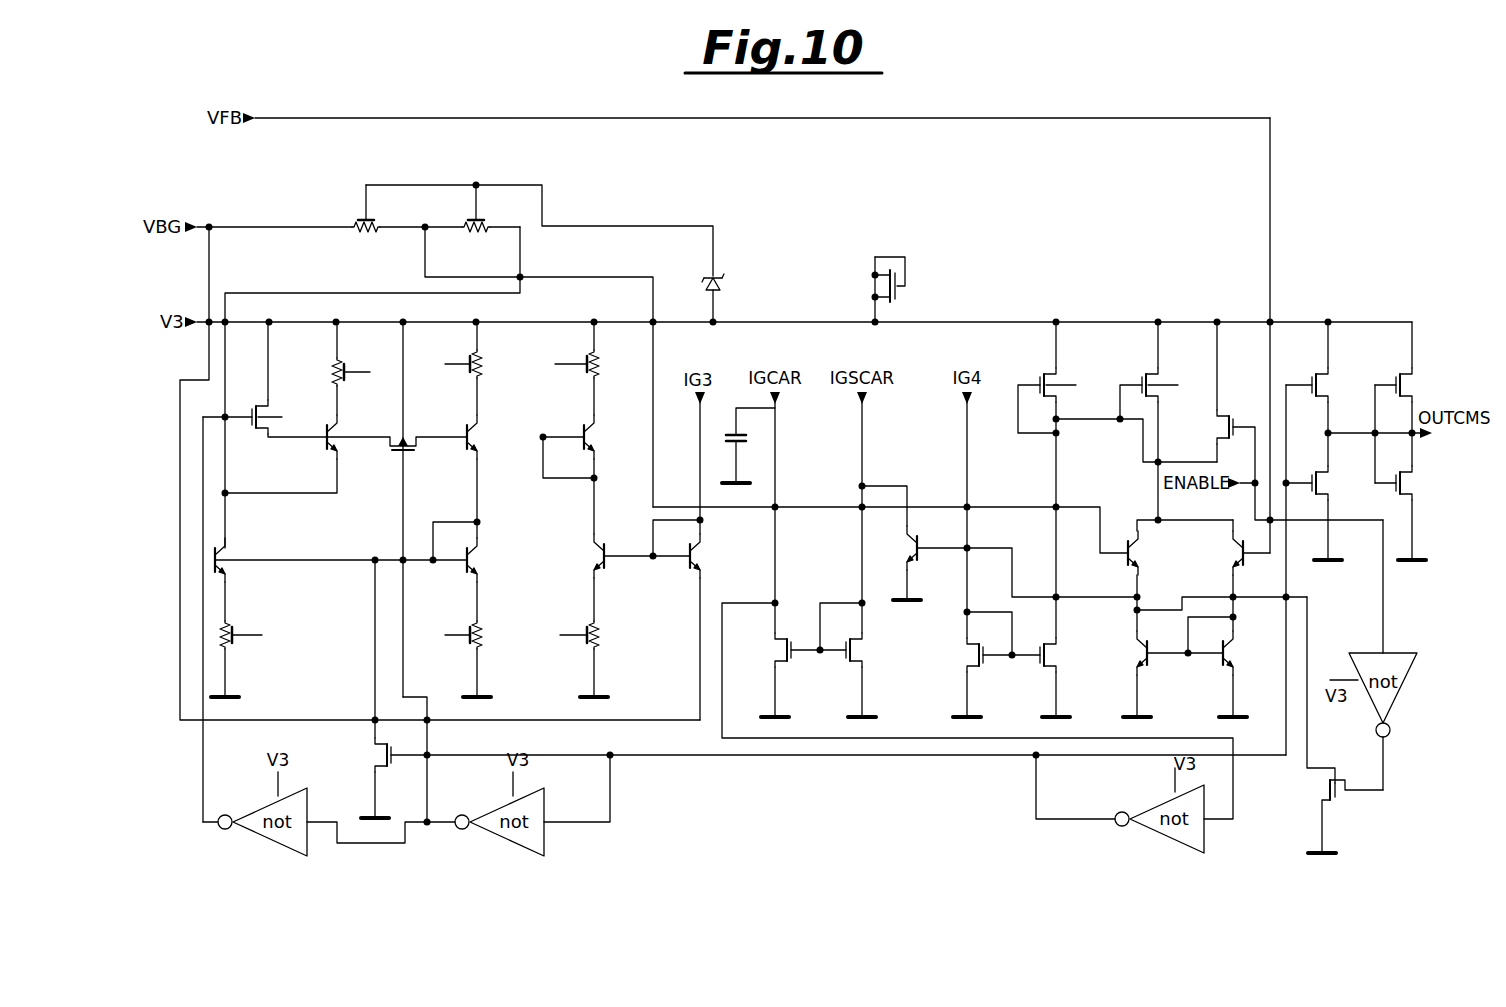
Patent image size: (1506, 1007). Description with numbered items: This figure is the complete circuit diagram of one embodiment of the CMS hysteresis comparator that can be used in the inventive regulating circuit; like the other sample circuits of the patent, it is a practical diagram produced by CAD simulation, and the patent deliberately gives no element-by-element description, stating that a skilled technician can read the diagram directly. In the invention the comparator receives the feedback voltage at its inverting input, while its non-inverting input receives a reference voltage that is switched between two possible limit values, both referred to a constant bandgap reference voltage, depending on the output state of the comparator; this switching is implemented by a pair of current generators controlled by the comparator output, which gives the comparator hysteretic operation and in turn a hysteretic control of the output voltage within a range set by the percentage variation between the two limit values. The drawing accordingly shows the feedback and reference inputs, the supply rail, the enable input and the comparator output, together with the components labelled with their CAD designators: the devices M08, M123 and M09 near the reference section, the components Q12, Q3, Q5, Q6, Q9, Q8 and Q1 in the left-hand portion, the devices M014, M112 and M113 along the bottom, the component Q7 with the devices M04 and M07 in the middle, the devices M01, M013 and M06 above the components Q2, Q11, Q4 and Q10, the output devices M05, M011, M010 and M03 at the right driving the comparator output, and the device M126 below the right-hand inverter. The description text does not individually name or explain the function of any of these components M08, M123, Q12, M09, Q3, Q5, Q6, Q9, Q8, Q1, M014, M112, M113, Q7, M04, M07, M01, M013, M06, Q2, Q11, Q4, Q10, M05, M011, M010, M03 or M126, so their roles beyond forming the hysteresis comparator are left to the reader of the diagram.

The transistor M08 is at (890, 275).
The transistor M123 is at (265, 379).
The transistor Q12 is at (308, 409).
The transistor M09 is at (397, 509).
The transistor Q3 is at (462, 430).
The transistor Q5 is at (563, 428).
The transistor Q6 is at (339, 611).
The transistor Q9 is at (457, 608).
The transistor Q8 is at (606, 615).
The transistor Q1 is at (690, 560).
The transistor M014 is at (394, 689).
The transistor M112 is at (803, 558).
The transistor M113 is at (847, 558).
The transistor Q7 is at (998, 542).
The transistor M04 is at (996, 558).
The transistor M07 is at (1045, 575).
The transistor M01 is at (1059, 379).
The transistor M013 is at (1136, 423).
The transistor M06 is at (1300, 421).
The transistor Q2 is at (1217, 575).
The transistor Q11 is at (1233, 575).
The transistor Q4 is at (1173, 674).
The transistor Q10 is at (1229, 667).
The transistor M05 is at (1309, 394).
The transistor M011 is at (1313, 505).
The transistor M010 is at (1388, 394).
The transistor M03 is at (1400, 505).
The transistor M126 is at (1345, 725).